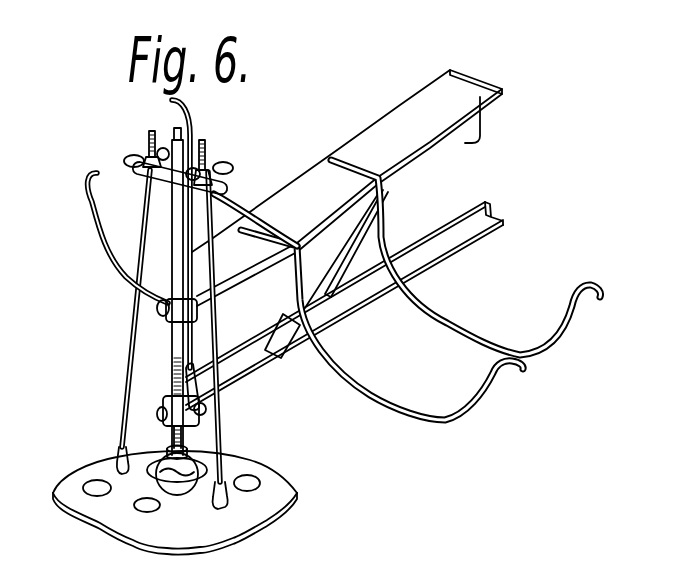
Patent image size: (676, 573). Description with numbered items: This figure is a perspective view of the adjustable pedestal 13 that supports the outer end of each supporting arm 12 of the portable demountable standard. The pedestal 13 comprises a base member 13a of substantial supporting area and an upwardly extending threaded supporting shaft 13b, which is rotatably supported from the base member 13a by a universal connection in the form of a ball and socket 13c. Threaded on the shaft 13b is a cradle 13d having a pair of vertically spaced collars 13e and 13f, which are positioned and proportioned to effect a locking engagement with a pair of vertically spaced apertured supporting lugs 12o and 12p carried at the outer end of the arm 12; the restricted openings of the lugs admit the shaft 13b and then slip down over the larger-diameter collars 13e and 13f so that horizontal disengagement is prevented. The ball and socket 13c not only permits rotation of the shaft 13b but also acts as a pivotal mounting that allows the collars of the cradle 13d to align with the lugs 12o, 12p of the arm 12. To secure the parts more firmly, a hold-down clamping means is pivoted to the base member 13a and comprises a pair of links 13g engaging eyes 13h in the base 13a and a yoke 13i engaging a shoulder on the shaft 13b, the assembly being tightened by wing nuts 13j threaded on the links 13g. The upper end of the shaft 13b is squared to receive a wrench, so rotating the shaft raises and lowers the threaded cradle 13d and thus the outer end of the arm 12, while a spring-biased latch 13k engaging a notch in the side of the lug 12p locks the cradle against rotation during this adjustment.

The supporting arm 12 is at (410, 113).
The apertured supporting lug 12o is at (160, 303).
The apertured supporting lug 12p is at (164, 412).
The adjustable pedestal 13 is at (143, 361).
The base member 13a is at (277, 502).
The threaded supporting shaft 13b is at (177, 220).
The ball and socket 13c is at (187, 482).
The cradle 13d is at (190, 350).
The collar 13e is at (173, 321).
The collar 13f is at (166, 402).
The link 13g is at (140, 253).
The eye 13h is at (116, 457).
The yoke 13i is at (232, 183).
The wing nut 13j is at (128, 160).
The spring-biased latch 13k is at (203, 403).